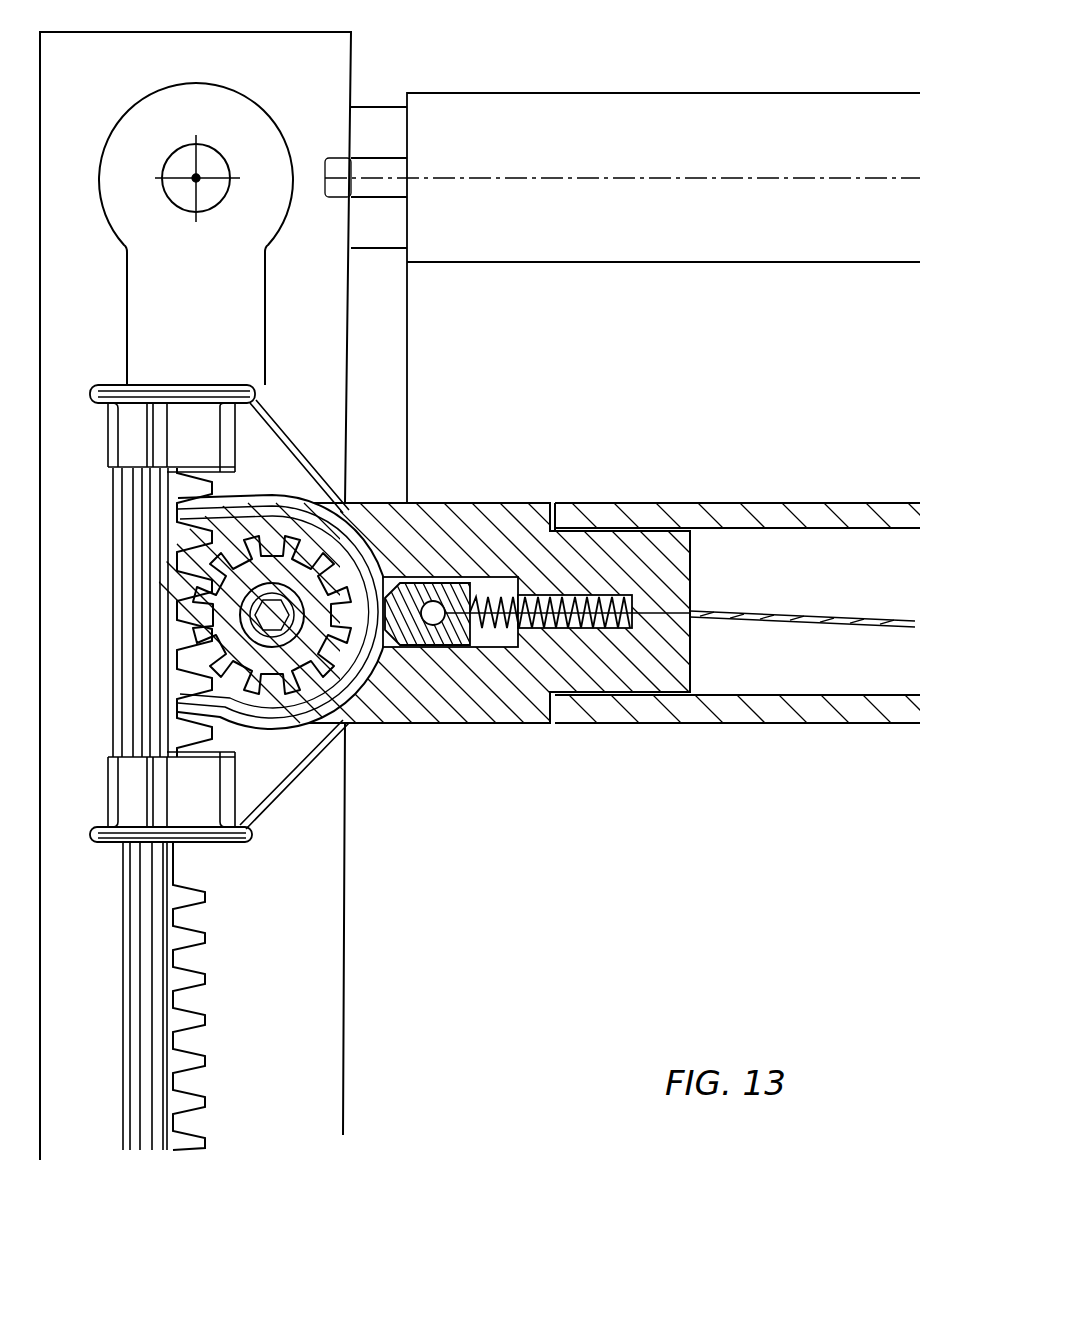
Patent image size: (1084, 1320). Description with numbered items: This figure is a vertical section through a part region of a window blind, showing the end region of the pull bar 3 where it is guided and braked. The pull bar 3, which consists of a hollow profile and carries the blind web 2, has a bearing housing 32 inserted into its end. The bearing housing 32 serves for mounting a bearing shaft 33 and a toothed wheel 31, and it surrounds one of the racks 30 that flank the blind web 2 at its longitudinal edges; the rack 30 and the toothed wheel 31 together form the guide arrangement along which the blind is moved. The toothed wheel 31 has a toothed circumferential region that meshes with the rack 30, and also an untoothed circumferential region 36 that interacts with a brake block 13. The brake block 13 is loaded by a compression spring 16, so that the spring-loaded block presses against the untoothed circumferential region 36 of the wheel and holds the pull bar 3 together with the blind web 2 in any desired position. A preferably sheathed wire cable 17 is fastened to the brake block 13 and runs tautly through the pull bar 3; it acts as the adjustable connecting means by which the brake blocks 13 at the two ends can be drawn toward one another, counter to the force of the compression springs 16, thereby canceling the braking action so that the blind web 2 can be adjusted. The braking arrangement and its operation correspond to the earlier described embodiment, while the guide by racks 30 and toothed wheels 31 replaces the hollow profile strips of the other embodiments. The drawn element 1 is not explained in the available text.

The cylinder 1 is at (708, 110).
The blind web 2 is at (533, 298).
The pull bar 3 is at (727, 718).
The brake block 13 is at (425, 582).
The compression spring 16 is at (532, 593).
The wire cable 17 is at (860, 627).
The rack 30 is at (193, 940).
The toothed wheel 31 is at (273, 617).
The bearing housing 32 is at (420, 517).
The bearing shaft 33 is at (407, 723).
The untoothed circumferential region 36 is at (293, 723).